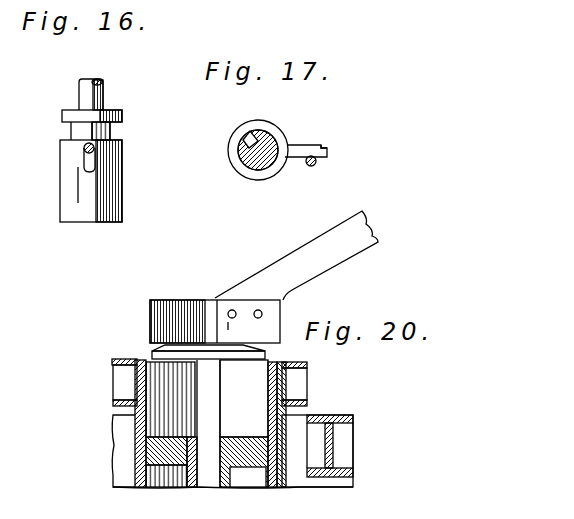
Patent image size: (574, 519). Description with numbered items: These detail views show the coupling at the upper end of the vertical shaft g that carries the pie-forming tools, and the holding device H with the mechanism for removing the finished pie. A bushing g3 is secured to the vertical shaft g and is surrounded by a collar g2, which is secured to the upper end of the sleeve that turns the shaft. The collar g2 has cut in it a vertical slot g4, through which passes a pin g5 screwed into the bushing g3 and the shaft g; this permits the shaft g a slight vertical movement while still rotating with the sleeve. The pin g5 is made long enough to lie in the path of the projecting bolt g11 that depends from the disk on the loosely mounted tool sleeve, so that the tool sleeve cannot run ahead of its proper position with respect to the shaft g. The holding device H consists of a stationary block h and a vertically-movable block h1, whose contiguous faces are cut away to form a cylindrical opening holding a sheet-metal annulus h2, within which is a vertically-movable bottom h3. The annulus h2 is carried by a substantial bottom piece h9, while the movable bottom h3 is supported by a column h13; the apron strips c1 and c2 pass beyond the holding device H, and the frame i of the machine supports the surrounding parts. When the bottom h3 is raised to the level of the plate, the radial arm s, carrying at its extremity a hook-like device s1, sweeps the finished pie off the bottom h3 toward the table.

In FIG. 16, the vertical shaft g is at (82, 95).
In FIG. 17, the vertical shaft g is at (247, 140).
In FIG. 16, the collar g2 is at (70, 203).
In FIG. 17, the collar g2 is at (257, 179).
In FIG. 16, the bushing g3 is at (122, 118).
In FIG. 17, the bushing g3 is at (252, 152).
In FIG. 16, the vertical slot g4 is at (100, 168).
In FIG. 17, the vertical slot g4 is at (278, 144).
In FIG. 16, the pin g5 is at (88, 157).
In FIG. 17, the pin g5 is at (297, 163).
In FIG. 17, the projecting bolt g11 is at (328, 162).
In FIG. 20, the radial arm s is at (330, 262).
In FIG. 20, the hook-like device s1 is at (190, 308).
In FIG. 20, the movable bottom h3 is at (160, 353).
In FIG. 20, the apron strip c2 is at (125, 402).
In FIG. 20, the apron strip c1 is at (300, 370).
In FIG. 20, the stationary block h is at (140, 420).
In FIG. 20, the sheet-metal annulus h2 is at (148, 408).
In FIG. 20, the holding device H is at (232, 423).
In FIG. 20, the bottom piece h9 is at (165, 450).
In FIG. 20, the column h13 is at (205, 477).
In FIG. 20, the vertically-movable block h1 is at (258, 480).
In FIG. 20, the frame i is at (333, 448).